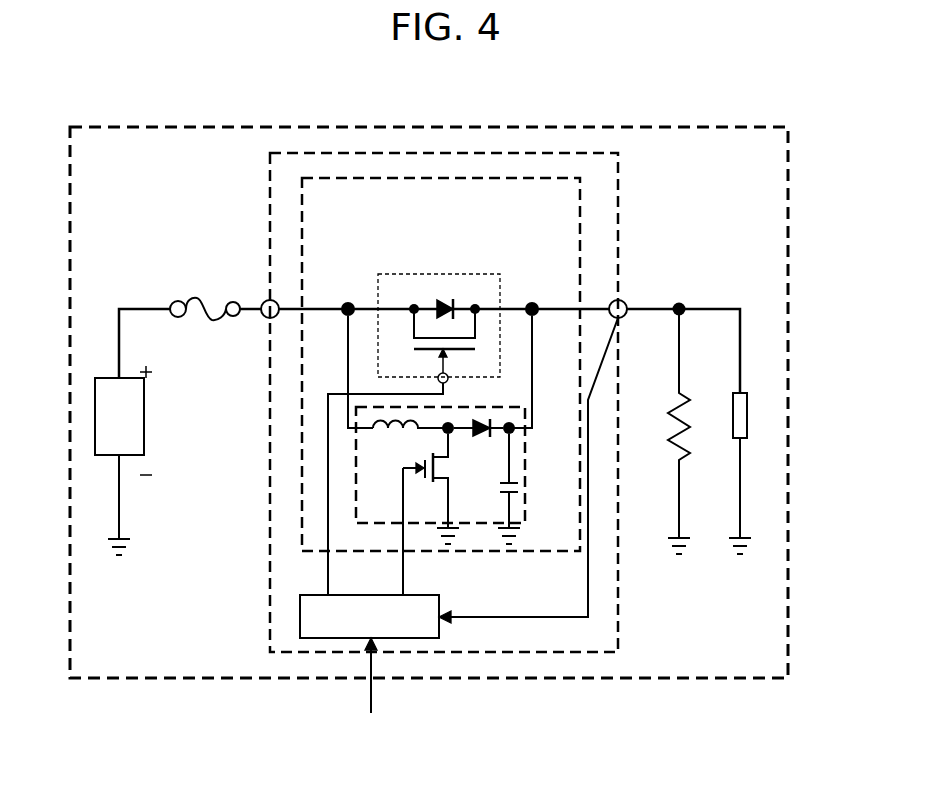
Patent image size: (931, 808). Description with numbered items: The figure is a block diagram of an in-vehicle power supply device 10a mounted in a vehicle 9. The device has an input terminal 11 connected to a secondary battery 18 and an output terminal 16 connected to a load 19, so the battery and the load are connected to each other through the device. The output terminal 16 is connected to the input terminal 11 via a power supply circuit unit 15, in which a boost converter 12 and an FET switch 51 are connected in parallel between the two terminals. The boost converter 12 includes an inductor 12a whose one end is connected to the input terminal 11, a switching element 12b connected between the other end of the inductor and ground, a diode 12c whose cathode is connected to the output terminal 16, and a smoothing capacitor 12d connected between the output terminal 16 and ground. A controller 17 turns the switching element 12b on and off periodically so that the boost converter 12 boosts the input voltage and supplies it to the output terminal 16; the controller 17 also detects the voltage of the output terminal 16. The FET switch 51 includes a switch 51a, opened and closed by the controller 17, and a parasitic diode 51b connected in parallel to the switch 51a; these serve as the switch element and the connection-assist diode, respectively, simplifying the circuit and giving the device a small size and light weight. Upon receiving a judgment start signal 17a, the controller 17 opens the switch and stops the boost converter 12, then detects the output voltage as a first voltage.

The vehicle 9 is at (788, 612).
The in-vehicle power supply device 10a is at (585, 653).
The input terminal 11 is at (262, 299).
The boost converter 12 is at (467, 532).
The inductor 12a is at (380, 436).
The switching element 12b is at (420, 483).
The diode 12c is at (525, 477).
The smoothing capacitor 12d is at (517, 502).
The power supply circuit unit 15 is at (581, 188).
The output terminal 16 is at (628, 297).
The controller 17 is at (300, 622).
The judgment start signal 17a is at (372, 695).
The secondary battery 18 is at (95, 408).
The load 19 is at (747, 427).
The FET switch 51 is at (377, 298).
The switch 51a is at (398, 358).
The parasitic diode 51b is at (437, 300).